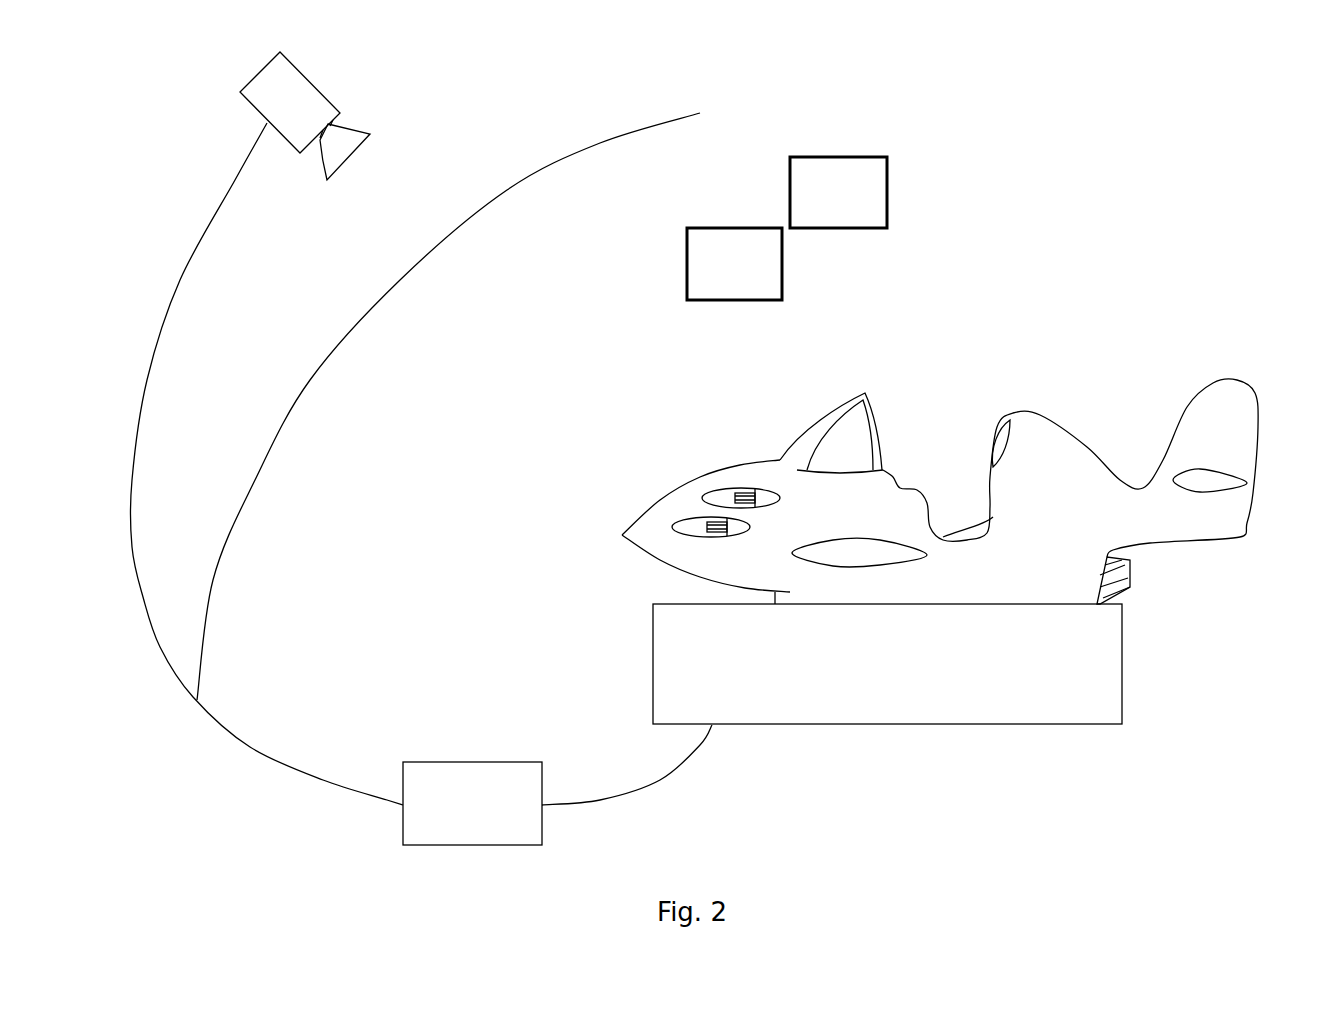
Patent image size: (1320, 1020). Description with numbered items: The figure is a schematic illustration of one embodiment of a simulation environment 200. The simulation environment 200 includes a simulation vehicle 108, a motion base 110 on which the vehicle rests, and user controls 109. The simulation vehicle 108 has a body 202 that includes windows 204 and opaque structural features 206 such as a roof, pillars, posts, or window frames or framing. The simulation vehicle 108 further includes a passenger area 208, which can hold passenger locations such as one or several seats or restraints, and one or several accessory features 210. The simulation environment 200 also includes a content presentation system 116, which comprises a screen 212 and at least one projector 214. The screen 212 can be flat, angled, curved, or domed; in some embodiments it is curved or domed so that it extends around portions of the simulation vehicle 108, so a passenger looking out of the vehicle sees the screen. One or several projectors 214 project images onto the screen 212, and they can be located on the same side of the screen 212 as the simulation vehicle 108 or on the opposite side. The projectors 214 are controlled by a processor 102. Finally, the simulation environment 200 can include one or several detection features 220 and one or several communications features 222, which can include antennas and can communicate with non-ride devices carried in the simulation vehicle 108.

The processor 102 is at (557, 785).
The simulation vehicle 108 is at (1024, 346).
The user controls 109 is at (900, 473).
The motion base 110 is at (1012, 725).
The content presentation system 116 is at (472, 76).
The simulation environment 200 is at (1180, 144).
The body 202 is at (700, 477).
The windows 204 is at (817, 438).
The opaque structural features 206 is at (870, 393).
The passenger area 208 is at (954, 434).
The accessory features 210 is at (697, 557).
The screen 212 is at (595, 145).
The projector 214 is at (262, 74).
The detection features 220 is at (734, 264).
The communications features 222 is at (838, 192).